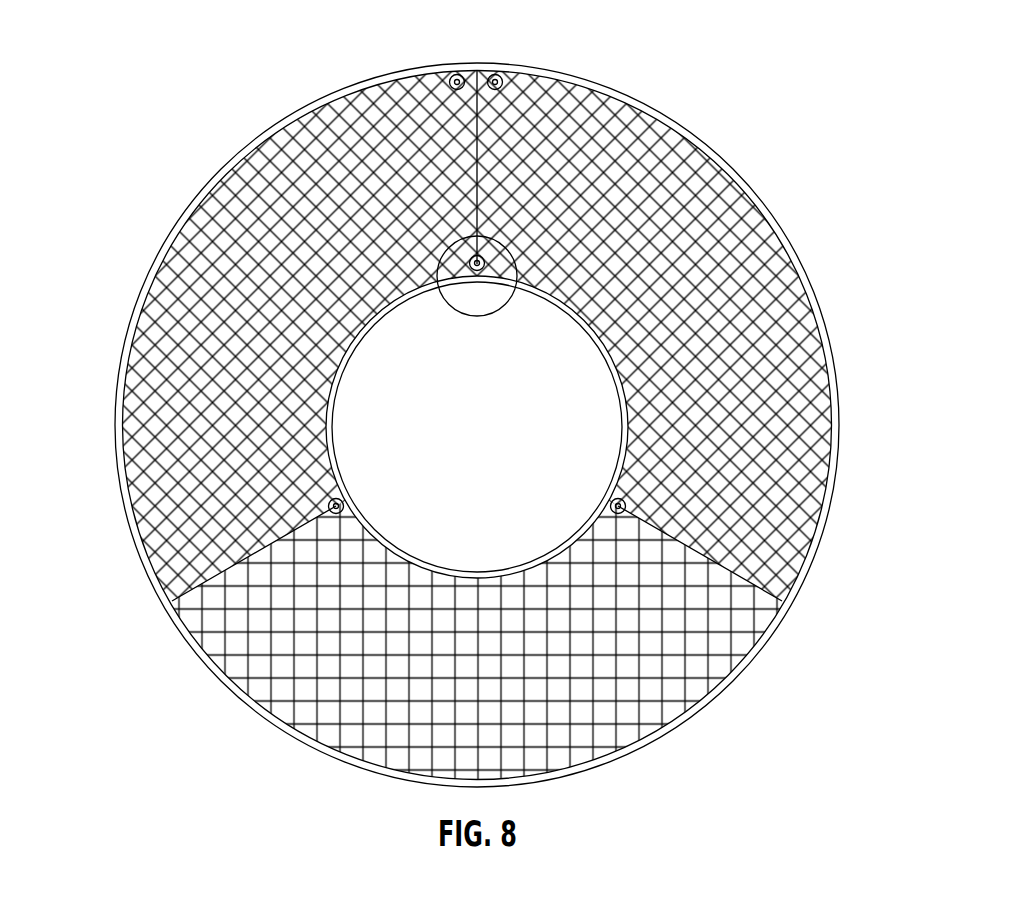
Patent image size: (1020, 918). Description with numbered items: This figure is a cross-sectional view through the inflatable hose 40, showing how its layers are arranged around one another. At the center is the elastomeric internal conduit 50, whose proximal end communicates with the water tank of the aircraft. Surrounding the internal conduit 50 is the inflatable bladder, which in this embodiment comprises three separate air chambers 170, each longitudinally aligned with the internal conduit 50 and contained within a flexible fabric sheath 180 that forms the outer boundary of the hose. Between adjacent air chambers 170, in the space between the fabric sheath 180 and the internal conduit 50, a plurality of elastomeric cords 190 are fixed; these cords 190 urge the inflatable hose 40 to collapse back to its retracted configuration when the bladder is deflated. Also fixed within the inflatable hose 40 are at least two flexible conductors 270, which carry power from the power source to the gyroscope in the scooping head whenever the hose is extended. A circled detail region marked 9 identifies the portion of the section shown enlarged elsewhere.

The inflatable hose 40 is at (510, 459).
The elastomeric internal conduit 50 is at (618, 390).
The air chambers 170 is at (665, 155).
The flexible fabric sheath 180 is at (119, 478).
The elastomeric cords 190 is at (473, 152).
The flexible conductors 270 is at (457, 72).
The detail region of FIG. 9 is at (465, 316).